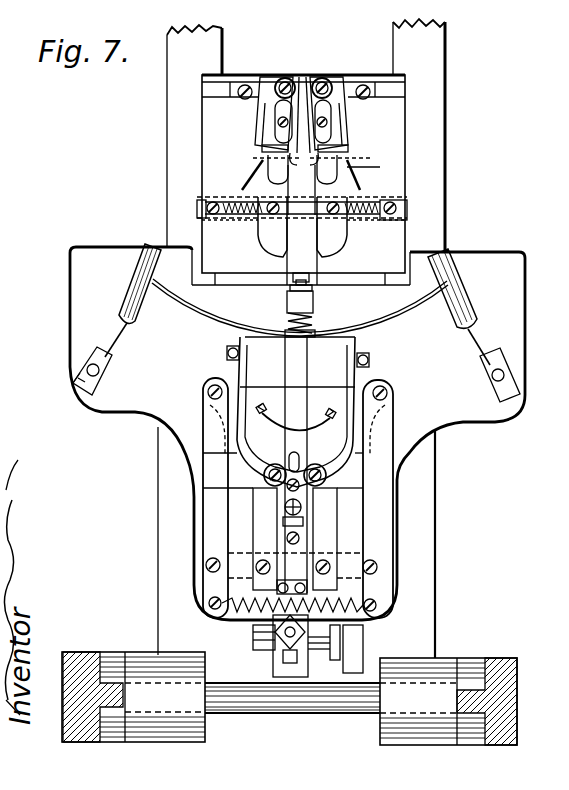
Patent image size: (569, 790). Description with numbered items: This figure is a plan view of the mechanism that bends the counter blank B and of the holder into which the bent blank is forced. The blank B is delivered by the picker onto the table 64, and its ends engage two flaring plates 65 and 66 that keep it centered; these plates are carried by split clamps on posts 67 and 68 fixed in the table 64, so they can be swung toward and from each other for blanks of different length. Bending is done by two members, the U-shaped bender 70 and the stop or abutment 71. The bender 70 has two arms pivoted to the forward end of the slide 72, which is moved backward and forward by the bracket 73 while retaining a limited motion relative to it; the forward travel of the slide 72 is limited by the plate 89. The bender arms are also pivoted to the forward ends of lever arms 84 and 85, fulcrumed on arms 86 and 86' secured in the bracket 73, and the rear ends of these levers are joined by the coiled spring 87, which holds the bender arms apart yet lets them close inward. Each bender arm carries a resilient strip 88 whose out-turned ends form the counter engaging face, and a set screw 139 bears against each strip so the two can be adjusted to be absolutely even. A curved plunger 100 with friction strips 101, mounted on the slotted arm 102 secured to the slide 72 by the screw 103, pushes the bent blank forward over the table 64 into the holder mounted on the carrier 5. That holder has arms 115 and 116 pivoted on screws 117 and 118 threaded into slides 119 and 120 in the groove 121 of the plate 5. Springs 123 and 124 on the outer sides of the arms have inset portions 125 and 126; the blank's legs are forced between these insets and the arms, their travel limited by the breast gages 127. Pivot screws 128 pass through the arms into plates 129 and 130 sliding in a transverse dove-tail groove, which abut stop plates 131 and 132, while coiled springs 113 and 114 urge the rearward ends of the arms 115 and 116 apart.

The plate or carrier 5 is at (388, 138).
The table 64 is at (483, 413).
The plate 65 is at (123, 298).
The plate 66 is at (457, 290).
The post 67 is at (88, 368).
The post 68 is at (498, 368).
The U-shaped plunger (bender) 70 is at (245, 388).
The stop or abutment 71 is at (300, 320).
The slide 72 is at (285, 537).
The bracket 73 is at (325, 522).
The lever arm 84 is at (222, 487).
The lever arm 85 is at (377, 488).
The arm 86 is at (248, 553).
The arm 86' is at (379, 562).
The coiled spring 87 is at (243, 607).
The resilient plate or strip 88 is at (226, 371).
The plate 89 is at (280, 643).
The plunger 100 is at (287, 425).
The friction strips 101 is at (298, 426).
The slotted arm 102 is at (292, 447).
The screw 103 is at (288, 490).
The coiled spring 113 is at (230, 238).
The coiled spring 114 is at (376, 238).
The arm 115 is at (272, 245).
The arm 116 is at (335, 240).
The screw 117 is at (283, 80).
The screw 118 is at (323, 83).
The slide 119 is at (234, 82).
The slide 120 is at (373, 84).
The groove 121 is at (213, 90).
The spring 123 is at (258, 125).
The spring 124 is at (350, 122).
The inset portion 125 is at (258, 162).
The inset portion 126 is at (380, 168).
The breast gage 127 is at (303, 146).
The pivot screw 128 is at (302, 251).
The plate 129 is at (230, 220).
The plate 130 is at (382, 201).
The stop plate 131 is at (197, 206).
The stop plate 132 is at (407, 221).
The pins 139 is at (229, 350).
The counter blank B is at (300, 316).